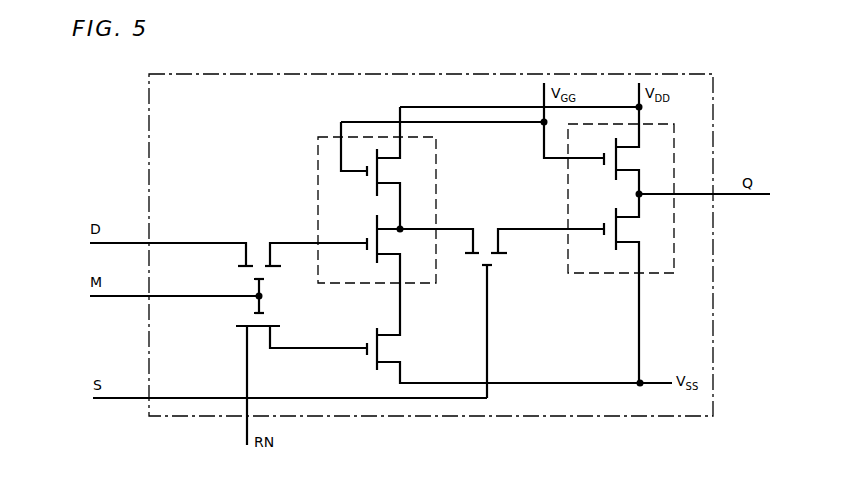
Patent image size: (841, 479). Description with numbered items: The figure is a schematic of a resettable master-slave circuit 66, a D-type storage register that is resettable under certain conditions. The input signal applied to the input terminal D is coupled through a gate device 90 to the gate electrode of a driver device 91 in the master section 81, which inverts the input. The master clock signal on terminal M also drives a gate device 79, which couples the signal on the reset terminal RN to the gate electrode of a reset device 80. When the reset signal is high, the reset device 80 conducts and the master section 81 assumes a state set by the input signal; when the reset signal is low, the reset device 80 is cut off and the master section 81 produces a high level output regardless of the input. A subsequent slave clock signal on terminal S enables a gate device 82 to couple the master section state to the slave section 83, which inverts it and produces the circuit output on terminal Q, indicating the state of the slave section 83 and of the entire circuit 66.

The circuit 66 is at (294, 74).
The gate device 79 is at (255, 336).
The reset device 80 is at (396, 346).
The master section 81 is at (318, 144).
The gate device 82 is at (487, 247).
The slave section 83 is at (602, 274).
The gate device 90 is at (259, 262).
The driver device 91 is at (376, 235).